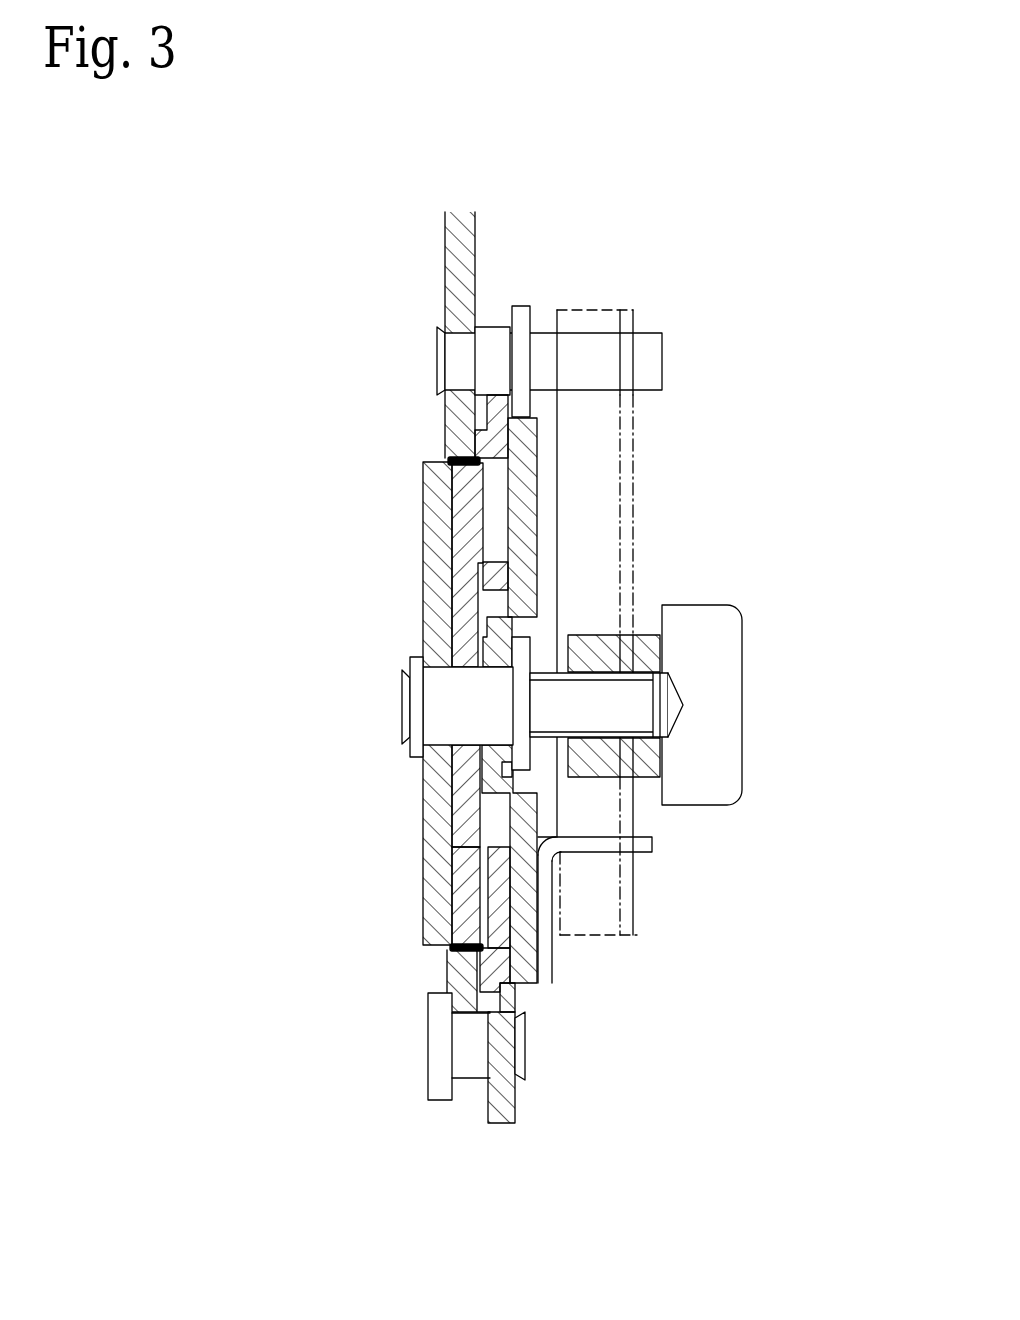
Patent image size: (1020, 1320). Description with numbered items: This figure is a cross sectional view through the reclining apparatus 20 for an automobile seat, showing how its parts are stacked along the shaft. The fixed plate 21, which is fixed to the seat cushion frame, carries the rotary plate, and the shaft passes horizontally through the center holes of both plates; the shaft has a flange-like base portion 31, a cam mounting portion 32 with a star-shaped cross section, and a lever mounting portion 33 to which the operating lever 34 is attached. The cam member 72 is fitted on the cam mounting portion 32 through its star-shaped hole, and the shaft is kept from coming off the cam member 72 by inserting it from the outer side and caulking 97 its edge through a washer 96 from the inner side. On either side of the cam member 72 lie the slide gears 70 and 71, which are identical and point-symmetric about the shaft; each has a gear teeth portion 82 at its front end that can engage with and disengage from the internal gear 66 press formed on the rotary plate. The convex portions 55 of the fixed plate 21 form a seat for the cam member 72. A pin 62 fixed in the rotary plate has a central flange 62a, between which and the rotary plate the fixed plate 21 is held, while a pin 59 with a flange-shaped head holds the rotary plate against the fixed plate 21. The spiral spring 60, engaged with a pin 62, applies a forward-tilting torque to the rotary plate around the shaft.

The reclining apparatus 20 is at (388, 256).
The fixed plate 21 is at (376, 540).
The flange-like base portion 31 is at (535, 780).
The cam mounting portion 32 is at (514, 640).
The lever mounting portion 33 is at (605, 640).
The operating lever 34 is at (745, 651).
The convex portion 55 is at (482, 632).
The pin 59 is at (428, 1067).
The spiral spring 60 is at (640, 465).
The pin 62 is at (490, 326).
The flange 62a is at (527, 305).
The internal gear 66 is at (432, 460).
The slide gear 70 is at (460, 888).
The slide gear 71 is at (460, 508).
The cam member 72 is at (475, 772).
The gear teeth portion 82 is at (447, 435).
The washer 96 is at (410, 660).
The caulking 97 is at (403, 738).